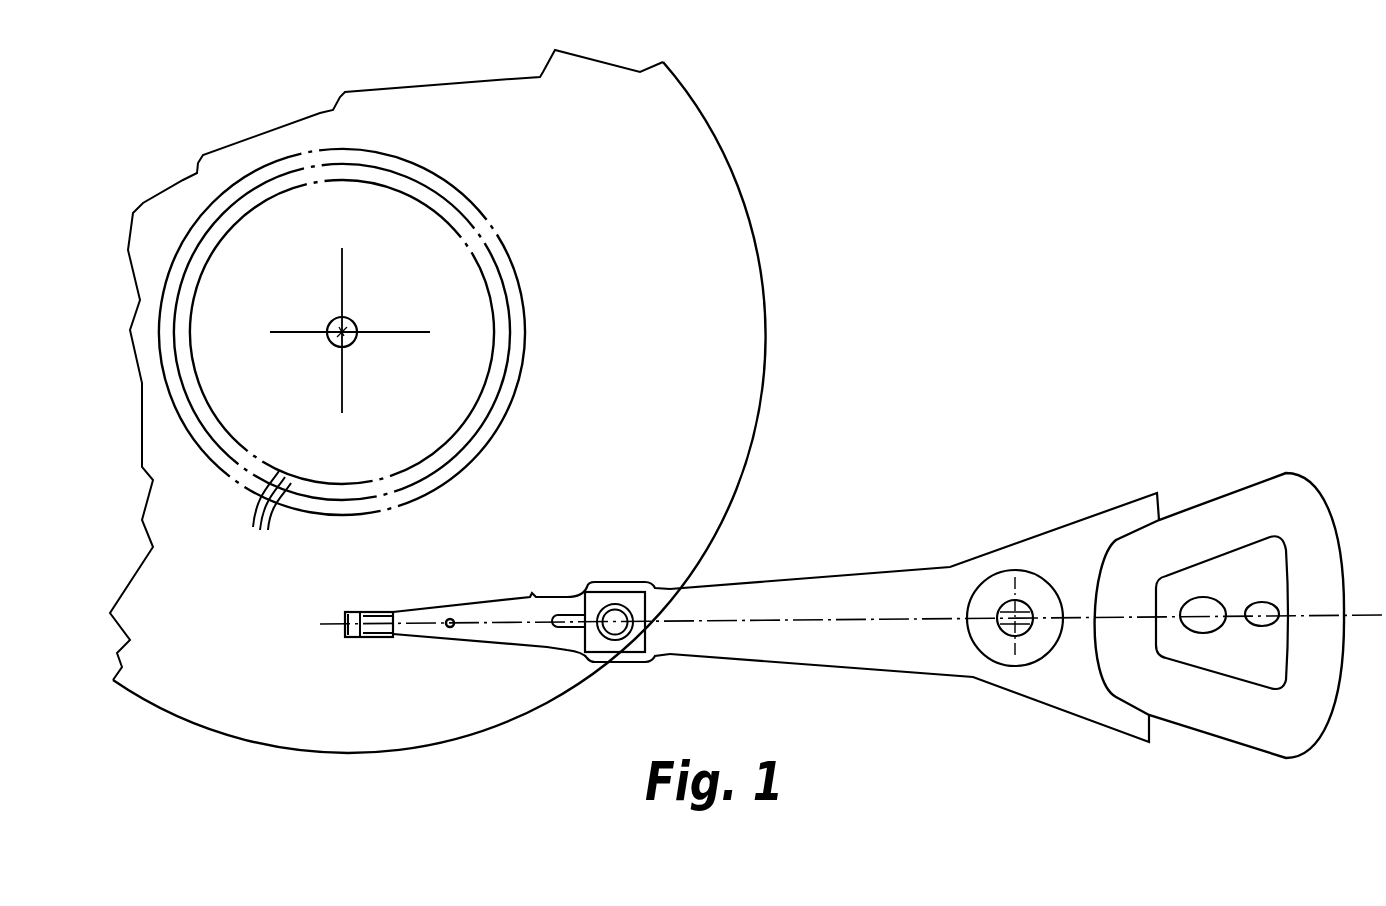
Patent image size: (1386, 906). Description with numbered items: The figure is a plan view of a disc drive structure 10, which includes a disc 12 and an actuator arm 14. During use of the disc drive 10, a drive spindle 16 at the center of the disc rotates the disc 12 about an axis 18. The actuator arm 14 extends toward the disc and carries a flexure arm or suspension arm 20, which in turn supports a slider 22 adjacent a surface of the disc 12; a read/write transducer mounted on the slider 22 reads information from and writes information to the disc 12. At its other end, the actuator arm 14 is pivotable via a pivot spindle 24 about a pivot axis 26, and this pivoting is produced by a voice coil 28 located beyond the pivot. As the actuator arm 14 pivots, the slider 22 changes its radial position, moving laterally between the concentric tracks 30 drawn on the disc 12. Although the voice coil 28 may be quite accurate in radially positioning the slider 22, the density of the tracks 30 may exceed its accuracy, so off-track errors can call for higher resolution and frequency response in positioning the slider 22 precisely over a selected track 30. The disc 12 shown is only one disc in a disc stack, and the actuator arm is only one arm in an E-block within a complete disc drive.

The disc drive structure 10 is at (932, 465).
The disc 12 is at (750, 247).
The actuator arm 14 is at (760, 580).
The drive spindle 16 is at (352, 321).
The axis 18 is at (333, 341).
The suspension arm 20 is at (477, 600).
The slider 22 is at (363, 612).
The pivot spindle 24 is at (1020, 597).
The pivot axis 26 is at (998, 627).
The voice coil 28 is at (1313, 477).
The tracks 30 is at (342, 357).